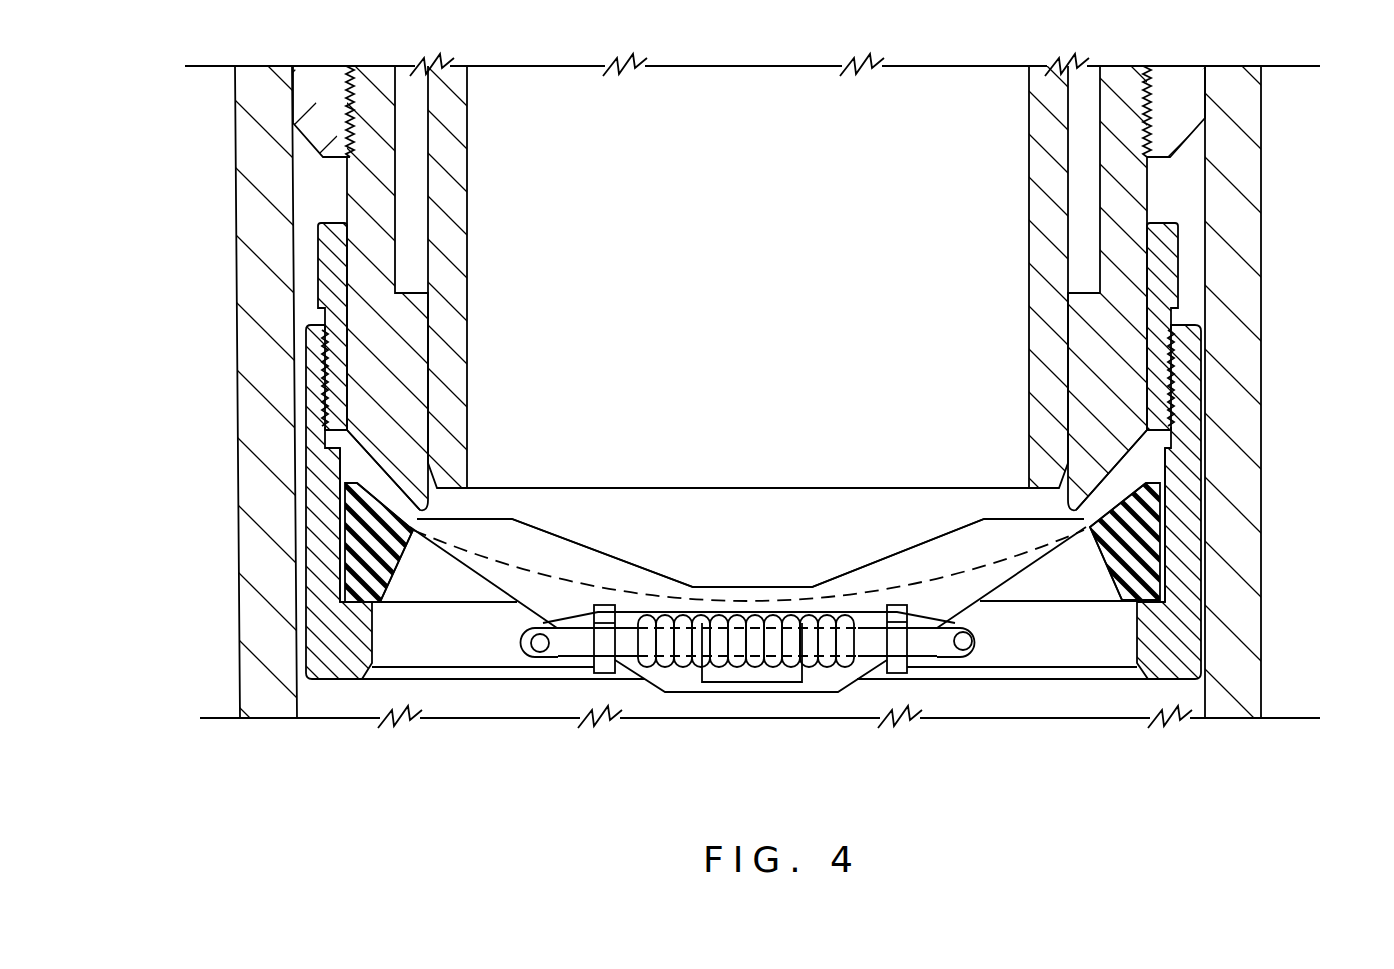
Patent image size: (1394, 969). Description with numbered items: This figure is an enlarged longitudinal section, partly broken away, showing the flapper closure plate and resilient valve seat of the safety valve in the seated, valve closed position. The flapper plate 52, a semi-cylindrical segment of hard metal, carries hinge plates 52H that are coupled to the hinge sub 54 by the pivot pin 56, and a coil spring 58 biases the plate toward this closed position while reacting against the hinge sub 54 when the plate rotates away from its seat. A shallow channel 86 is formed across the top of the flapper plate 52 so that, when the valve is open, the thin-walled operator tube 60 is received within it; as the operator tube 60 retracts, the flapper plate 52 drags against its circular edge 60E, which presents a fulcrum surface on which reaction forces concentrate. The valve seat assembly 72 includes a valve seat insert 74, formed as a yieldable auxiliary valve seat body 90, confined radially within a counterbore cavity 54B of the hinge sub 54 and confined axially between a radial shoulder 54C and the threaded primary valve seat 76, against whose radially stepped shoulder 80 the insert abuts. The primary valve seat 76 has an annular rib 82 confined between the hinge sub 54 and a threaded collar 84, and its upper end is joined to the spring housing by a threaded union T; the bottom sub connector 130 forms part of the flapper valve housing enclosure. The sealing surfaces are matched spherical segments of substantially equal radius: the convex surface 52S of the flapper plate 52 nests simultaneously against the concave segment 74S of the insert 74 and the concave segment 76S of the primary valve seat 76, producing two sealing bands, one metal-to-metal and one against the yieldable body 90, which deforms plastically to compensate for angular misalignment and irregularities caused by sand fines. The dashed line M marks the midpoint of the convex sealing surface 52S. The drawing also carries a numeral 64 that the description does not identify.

The flapper plate 52 is at (840, 562).
The convex spherical segment sealing surface 52S is at (915, 562).
The hinge plates 52H is at (543, 617).
The hinge sub 54 is at (1185, 638).
The counterbore cavity 54B is at (1167, 556).
The radial shoulder 54C is at (1128, 602).
The pivot pin 56 is at (935, 650).
The coil spring 58 is at (767, 660).
The operator tube 60 is at (455, 232).
The circular edge 60E is at (622, 492).
The retaining nut 64 is at (1195, 97).
The valve seat assembly 72 is at (1288, 424).
The valve seat insert 74 is at (1178, 538).
The concave spherical segment surface 74S is at (393, 577).
The primary valve seat 76 is at (1113, 415).
The concave spherical segment sealing surface 76S is at (427, 512).
The radially stepped shoulder 80 is at (1140, 510).
The annular rib 82 is at (1173, 437).
The threaded collar 84 is at (1170, 247).
The shallow channel 86 is at (727, 587).
The yieldable auxiliary valve seat body 90 is at (345, 545).
The bottom sub connector 130 is at (1243, 285).
The threaded union T is at (1147, 135).
The dashed line M is at (565, 578).